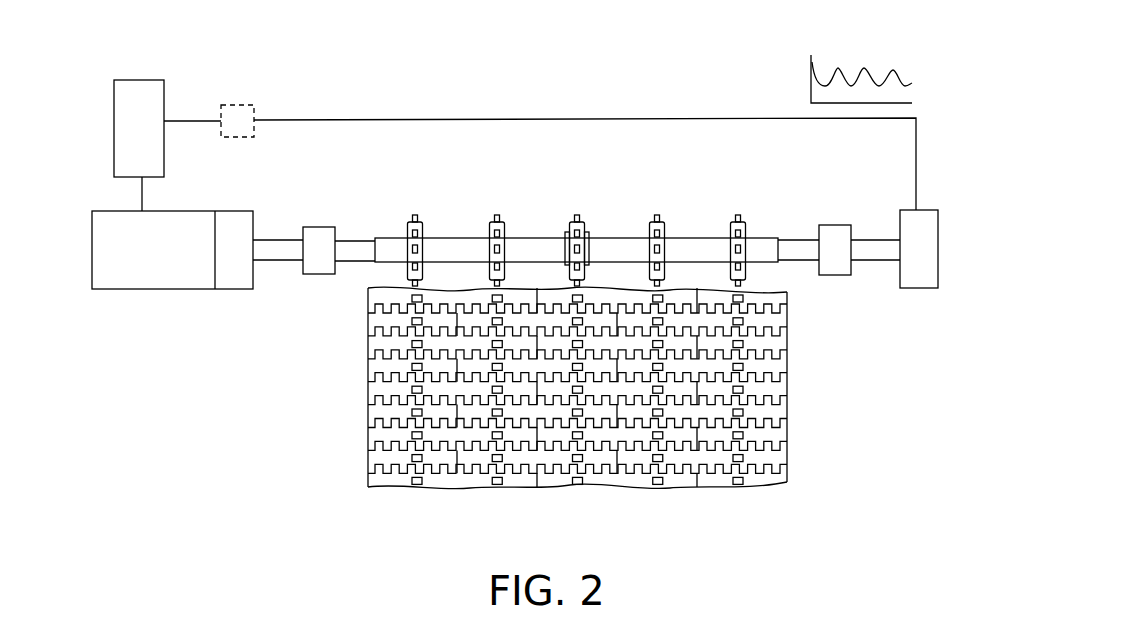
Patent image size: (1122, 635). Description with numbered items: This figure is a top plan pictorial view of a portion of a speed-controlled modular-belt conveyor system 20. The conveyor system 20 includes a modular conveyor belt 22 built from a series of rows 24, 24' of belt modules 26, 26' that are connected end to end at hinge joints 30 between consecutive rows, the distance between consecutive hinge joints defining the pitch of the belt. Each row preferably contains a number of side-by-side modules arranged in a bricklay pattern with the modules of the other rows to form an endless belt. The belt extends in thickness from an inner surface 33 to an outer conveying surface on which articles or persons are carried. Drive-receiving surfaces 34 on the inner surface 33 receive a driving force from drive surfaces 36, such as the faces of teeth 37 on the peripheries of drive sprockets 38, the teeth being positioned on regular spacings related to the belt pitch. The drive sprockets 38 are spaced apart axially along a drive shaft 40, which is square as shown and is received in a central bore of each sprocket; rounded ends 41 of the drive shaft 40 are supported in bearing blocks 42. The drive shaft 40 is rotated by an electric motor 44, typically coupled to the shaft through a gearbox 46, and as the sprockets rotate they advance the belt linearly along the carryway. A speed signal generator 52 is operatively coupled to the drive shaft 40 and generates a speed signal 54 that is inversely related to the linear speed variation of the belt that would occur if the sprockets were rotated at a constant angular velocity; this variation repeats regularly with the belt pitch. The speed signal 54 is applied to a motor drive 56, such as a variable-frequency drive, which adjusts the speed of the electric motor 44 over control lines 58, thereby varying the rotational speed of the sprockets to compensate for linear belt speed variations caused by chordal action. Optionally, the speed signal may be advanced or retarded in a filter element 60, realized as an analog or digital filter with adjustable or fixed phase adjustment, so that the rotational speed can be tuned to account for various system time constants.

The conveyor system 20 is at (250, 405).
The modular conveyor belt 22 is at (582, 402).
The row 24 is at (603, 310).
The row 24' is at (605, 334).
The belt module 26 is at (599, 416).
The belt module 26' is at (600, 394).
The hinge joint 30 is at (787, 378).
The inner surface 33 is at (370, 458).
The drive-receiving surface 34 is at (417, 487).
The drive surface 36 is at (423, 222).
The tooth 37 is at (505, 229).
The drive sprocket 38 is at (665, 228).
The drive shaft 40 is at (612, 240).
The rounded end 41 is at (282, 261).
The bearing block 42 is at (315, 227).
The electric motor 44 is at (148, 289).
The gearbox 46 is at (238, 211).
The speed signal generator 52 is at (914, 287).
The speed signal 54 is at (850, 72).
The motor drive 56 is at (145, 80).
The control line 58 is at (148, 193).
The filter element 60 is at (254, 106).